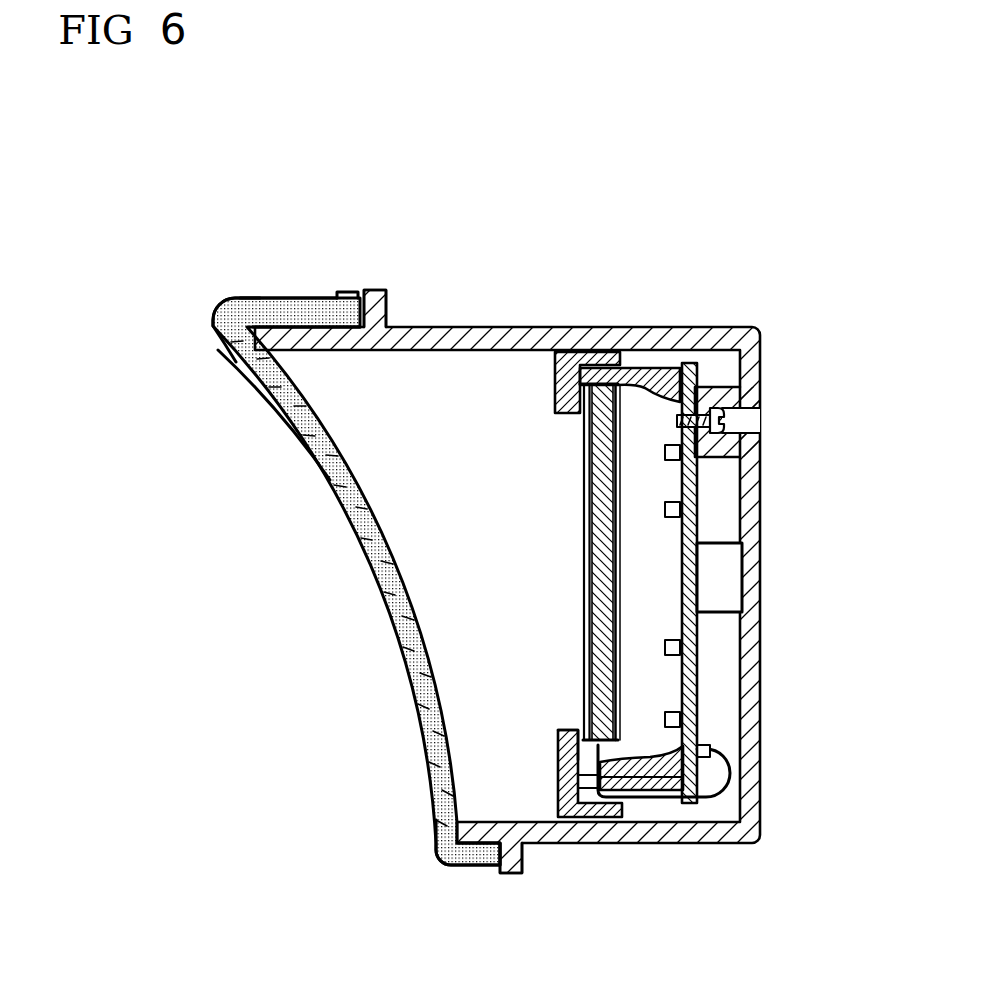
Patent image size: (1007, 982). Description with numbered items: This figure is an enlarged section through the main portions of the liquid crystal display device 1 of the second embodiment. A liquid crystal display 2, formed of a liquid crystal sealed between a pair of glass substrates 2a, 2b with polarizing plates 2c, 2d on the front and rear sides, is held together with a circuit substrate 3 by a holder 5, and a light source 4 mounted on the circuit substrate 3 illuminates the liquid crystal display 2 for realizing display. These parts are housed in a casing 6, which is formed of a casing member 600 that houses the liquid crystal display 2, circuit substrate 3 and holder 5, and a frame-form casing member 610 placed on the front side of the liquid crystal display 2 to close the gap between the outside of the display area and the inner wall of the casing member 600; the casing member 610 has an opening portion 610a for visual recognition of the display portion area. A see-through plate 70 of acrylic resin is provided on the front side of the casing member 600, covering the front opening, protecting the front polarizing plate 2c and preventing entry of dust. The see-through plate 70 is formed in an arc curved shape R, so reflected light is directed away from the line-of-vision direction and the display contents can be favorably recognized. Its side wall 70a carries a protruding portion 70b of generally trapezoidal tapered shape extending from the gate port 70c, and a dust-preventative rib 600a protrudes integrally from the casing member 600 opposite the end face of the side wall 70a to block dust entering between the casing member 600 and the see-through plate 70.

The liquid crystal display device 1 is at (318, 617).
The liquid crystal display 2 is at (540, 562).
The glass substrate 2a is at (600, 524).
The glass substrate 2b is at (612, 570).
The polarizing plate 2c is at (588, 492).
The polarizing plate 2d is at (505, 468).
The circuit substrate 3 is at (700, 590).
The light source 4 is at (673, 512).
The holder 5 is at (666, 380).
The casing 6 is at (645, 250).
The casing member 600 is at (641, 338).
The dust-preventative rib 600a is at (373, 310).
The casing member 610 is at (566, 366).
The opening portion 610a is at (567, 730).
The see-through plate 70 is at (326, 488).
The side wall 70a is at (262, 306).
The protruding portion 70b is at (316, 308).
The gate port 70c is at (347, 294).
The arc curved shape R is at (284, 421).